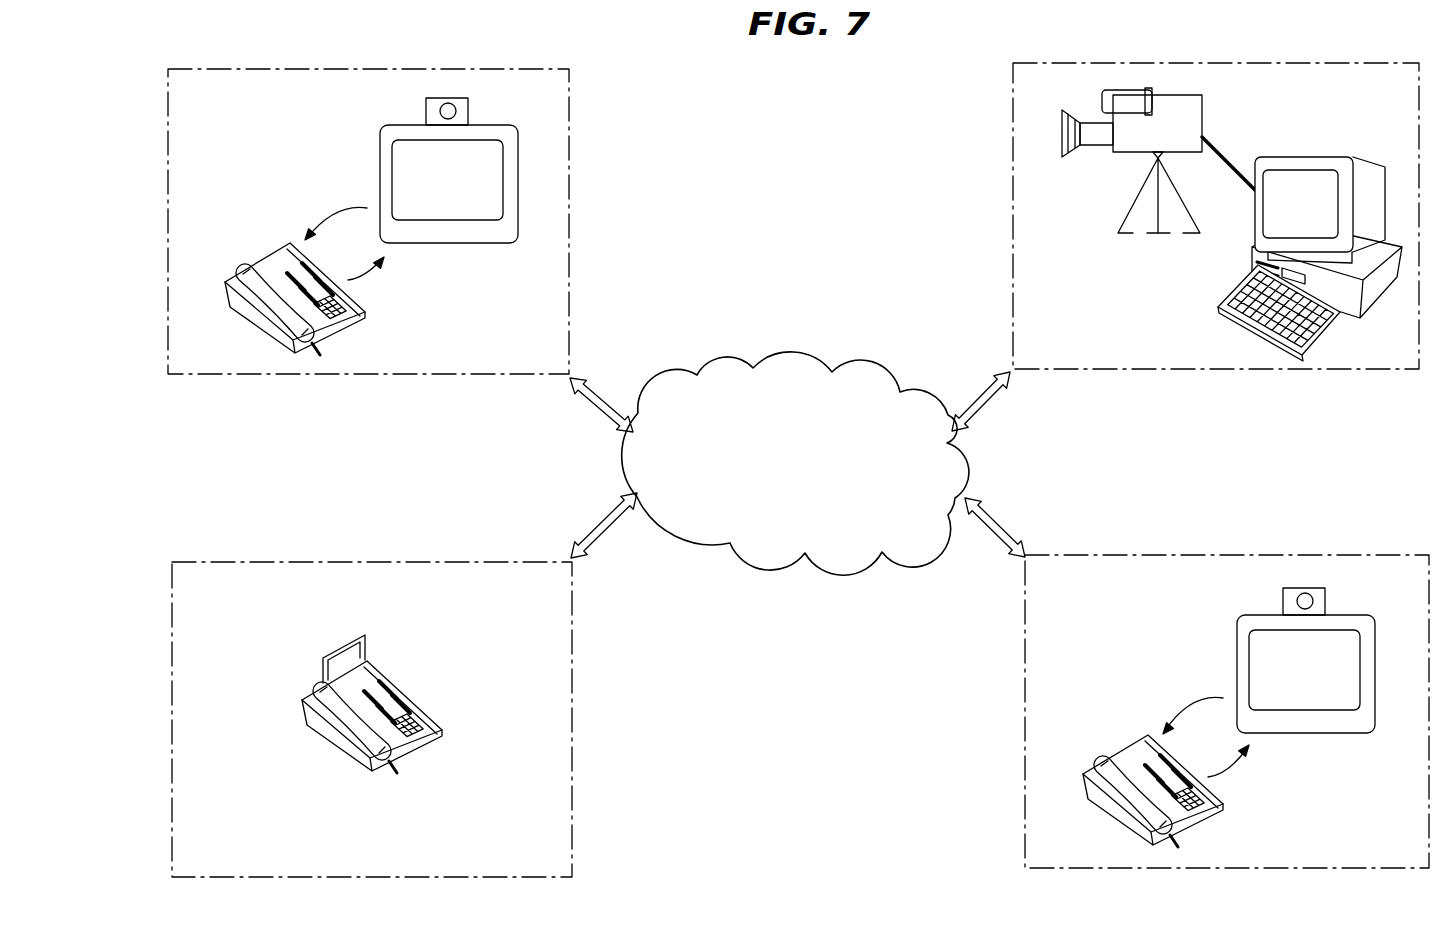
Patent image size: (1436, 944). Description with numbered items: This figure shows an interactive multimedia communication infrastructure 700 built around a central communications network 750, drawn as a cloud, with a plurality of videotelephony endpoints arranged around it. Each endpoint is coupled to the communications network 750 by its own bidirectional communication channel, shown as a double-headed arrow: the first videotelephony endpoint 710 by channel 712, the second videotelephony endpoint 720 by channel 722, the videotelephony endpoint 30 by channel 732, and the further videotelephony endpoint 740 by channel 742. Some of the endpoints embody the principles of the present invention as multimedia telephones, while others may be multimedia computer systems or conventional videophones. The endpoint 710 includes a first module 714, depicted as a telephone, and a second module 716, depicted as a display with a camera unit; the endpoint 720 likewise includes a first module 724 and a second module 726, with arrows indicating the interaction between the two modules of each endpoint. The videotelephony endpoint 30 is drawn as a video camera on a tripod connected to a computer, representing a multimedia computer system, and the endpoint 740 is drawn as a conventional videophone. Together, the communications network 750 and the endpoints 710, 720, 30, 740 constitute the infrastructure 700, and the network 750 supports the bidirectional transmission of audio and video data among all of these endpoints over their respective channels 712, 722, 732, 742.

The interactive multimedia communication infrastructure 700 is at (807, 154).
The videotelephony endpoint 710 is at (570, 91).
The bidirectional communication channel 712 is at (600, 397).
The first module 714 is at (247, 253).
The second module 716 is at (458, 98).
The videotelephony endpoint 30 is at (1013, 142).
The bidirectional communication channel 732 is at (978, 400).
The videotelephony endpoint 720 is at (1025, 835).
The bidirectional communication channel 722 is at (1000, 524).
The first module 724 is at (1104, 746).
The second module 726 is at (1318, 586).
The videotelephony endpoint 740 is at (578, 583).
The bidirectional communication channel 742 is at (603, 521).
The communications network 750 is at (718, 352).